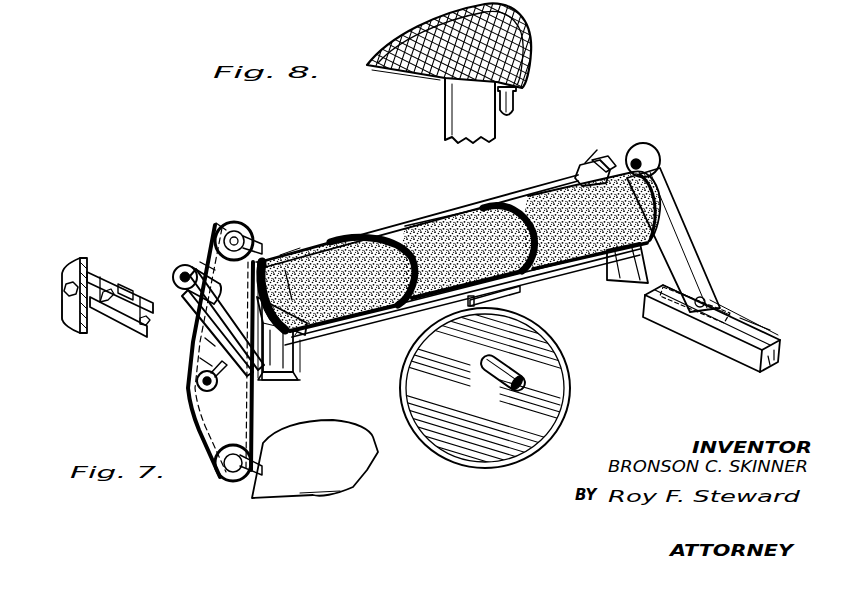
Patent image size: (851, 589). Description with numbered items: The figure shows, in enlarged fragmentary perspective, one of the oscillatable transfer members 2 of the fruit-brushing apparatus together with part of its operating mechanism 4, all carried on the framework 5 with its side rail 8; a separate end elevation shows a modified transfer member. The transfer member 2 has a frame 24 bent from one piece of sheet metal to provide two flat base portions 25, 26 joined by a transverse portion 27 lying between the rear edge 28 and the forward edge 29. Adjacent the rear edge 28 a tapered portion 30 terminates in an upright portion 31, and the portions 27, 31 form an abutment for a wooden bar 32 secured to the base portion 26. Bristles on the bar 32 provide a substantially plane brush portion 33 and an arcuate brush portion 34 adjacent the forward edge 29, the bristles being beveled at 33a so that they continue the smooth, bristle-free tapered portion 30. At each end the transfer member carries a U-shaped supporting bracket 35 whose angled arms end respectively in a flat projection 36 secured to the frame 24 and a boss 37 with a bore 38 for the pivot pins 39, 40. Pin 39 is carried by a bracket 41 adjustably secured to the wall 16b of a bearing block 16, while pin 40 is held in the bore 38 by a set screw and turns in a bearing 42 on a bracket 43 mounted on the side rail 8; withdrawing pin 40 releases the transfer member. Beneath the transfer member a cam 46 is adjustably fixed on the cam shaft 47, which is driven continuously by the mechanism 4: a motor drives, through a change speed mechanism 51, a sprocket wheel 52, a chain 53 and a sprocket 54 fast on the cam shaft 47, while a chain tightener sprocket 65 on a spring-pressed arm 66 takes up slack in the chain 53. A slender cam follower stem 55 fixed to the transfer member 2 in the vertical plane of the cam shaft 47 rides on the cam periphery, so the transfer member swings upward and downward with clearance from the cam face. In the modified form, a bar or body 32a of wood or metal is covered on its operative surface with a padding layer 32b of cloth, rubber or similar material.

In FIG. 7, the transfer member 2 is at (423, 227).
In FIG. 7, the operating mechanism 4 is at (326, 502).
In FIG. 7, the framework 5 is at (788, 337).
In FIG. 7, the side rail 8 is at (760, 313).
In FIG. 7, the bearing block 16 is at (76, 250).
In FIG. 7, the spaced wall of bearing block 16b is at (72, 327).
In FIG. 7, the frame 24 is at (551, 278).
In FIG. 7, the flat base portion 25 is at (212, 310).
In FIG. 7, the flat base portion 26 is at (203, 358).
In FIG. 7, the transverse portion 27 is at (207, 340).
In FIG. 7, the rear edge 28 is at (207, 293).
In FIG. 7, the forward edge 29 is at (343, 323).
In FIG. 7, the tapered portion 30 is at (310, 240).
In FIG. 7, the upright portion 31 is at (252, 238).
In FIG. 7, the wooden bar 32 is at (298, 340).
In FIG. 8, the bar or body 32a is at (423, 67).
In FIG. 8, the padding layer 32b is at (528, 40).
In FIG. 7, the plane brush portion 33 is at (490, 213).
In FIG. 7, the beveled bristle portion 33a is at (390, 233).
In FIG. 7, the arcuate brush portion 34 is at (363, 307).
In FIG. 8, the U-shaped supporting bracket 35 is at (463, 122).
In FIG. 7, the U-shaped supporting bracket 35 is at (282, 372).
In FIG. 7, the flat projection 36 is at (288, 283).
In FIG. 7, the boss 37 is at (197, 260).
In FIG. 7, the bore 38 is at (173, 277).
In FIG. 7, the pivot pin 39 is at (128, 288).
In FIG. 7, the pivot pin 40 is at (610, 165).
In FIG. 7, the bracket 41 is at (116, 323).
In FIG. 7, the bearing 42 is at (657, 155).
In FIG. 7, the bracket 43 is at (670, 205).
In FIG. 7, the cam 46 is at (550, 422).
In FIG. 7, the cam shaft 47 is at (213, 237).
In FIG. 7, the change speed mechanism 51 is at (368, 460).
In FIG. 7, the sprocket wheel 52 is at (227, 487).
In FIG. 7, the chain 53 is at (190, 421).
In FIG. 7, the sprocket 54 is at (227, 225).
In FIG. 8, the cam follower stem 55 is at (513, 97).
In FIG. 7, the cam follower stem 55 is at (480, 305).
In FIG. 7, the chain tightener sprocket 65 is at (255, 405).
In FIG. 7, the arm 66 is at (253, 391).